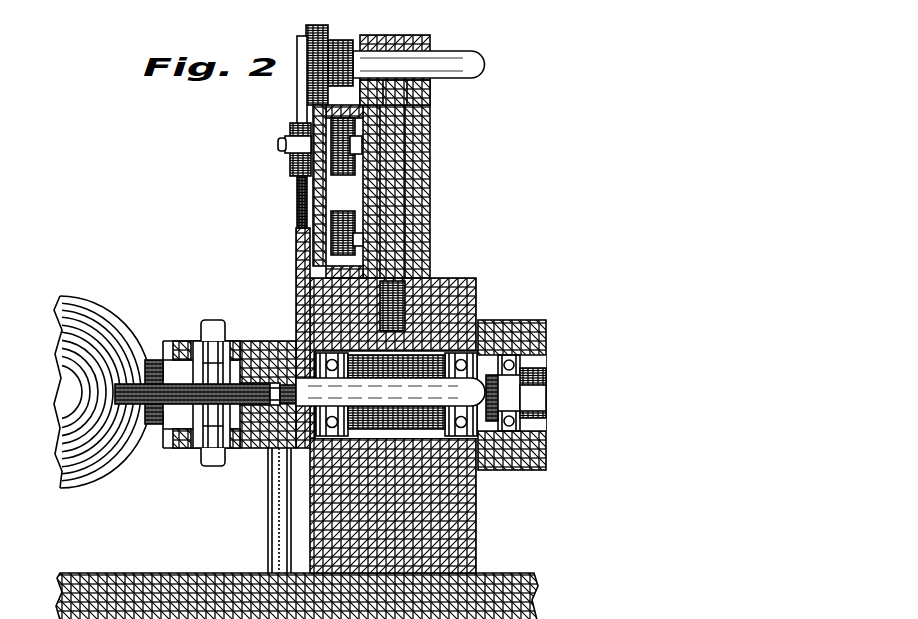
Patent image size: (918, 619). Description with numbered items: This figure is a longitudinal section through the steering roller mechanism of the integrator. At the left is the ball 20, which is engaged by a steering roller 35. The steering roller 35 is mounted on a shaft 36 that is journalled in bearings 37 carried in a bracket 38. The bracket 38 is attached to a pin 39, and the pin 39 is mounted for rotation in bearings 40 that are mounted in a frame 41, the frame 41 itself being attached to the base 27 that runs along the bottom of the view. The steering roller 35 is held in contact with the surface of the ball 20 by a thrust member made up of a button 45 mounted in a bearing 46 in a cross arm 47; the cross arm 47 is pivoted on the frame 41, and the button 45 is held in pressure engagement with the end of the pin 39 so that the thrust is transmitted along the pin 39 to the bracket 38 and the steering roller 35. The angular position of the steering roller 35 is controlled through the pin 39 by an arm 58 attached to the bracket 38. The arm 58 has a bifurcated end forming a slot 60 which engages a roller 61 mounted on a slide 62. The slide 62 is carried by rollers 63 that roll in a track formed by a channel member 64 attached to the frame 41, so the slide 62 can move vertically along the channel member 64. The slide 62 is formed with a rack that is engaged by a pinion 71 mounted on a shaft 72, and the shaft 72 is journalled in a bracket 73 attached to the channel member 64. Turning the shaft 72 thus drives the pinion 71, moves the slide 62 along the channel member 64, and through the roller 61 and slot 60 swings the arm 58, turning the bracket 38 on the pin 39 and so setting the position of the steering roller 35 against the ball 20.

The ball 20 is at (70, 352).
The base 27 is at (177, 578).
The steering roller 35 is at (158, 373).
The shaft 36 is at (213, 318).
The bearings 37 is at (231, 337).
The bracket 38 is at (258, 428).
The pin 39 is at (346, 376).
The bearings 40 is at (469, 313).
The frame 41 is at (457, 482).
The button 45 is at (538, 383).
The bearing 46 is at (508, 357).
The cross arm 47 is at (520, 330).
The arm 58 is at (289, 244).
The slot 60 is at (289, 75).
The roller 61 is at (283, 117).
The slide 62 is at (305, 174).
The rollers 63 is at (350, 150).
The channel member 64 is at (388, 176).
The pinion 71 is at (314, 22).
The shaft 72 is at (448, 53).
The bracket 73 is at (423, 77).